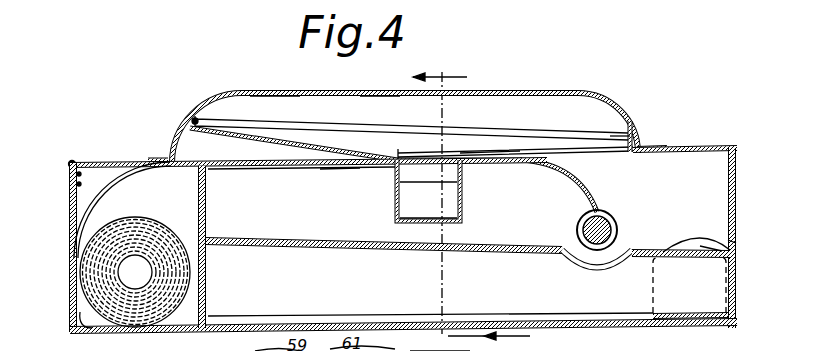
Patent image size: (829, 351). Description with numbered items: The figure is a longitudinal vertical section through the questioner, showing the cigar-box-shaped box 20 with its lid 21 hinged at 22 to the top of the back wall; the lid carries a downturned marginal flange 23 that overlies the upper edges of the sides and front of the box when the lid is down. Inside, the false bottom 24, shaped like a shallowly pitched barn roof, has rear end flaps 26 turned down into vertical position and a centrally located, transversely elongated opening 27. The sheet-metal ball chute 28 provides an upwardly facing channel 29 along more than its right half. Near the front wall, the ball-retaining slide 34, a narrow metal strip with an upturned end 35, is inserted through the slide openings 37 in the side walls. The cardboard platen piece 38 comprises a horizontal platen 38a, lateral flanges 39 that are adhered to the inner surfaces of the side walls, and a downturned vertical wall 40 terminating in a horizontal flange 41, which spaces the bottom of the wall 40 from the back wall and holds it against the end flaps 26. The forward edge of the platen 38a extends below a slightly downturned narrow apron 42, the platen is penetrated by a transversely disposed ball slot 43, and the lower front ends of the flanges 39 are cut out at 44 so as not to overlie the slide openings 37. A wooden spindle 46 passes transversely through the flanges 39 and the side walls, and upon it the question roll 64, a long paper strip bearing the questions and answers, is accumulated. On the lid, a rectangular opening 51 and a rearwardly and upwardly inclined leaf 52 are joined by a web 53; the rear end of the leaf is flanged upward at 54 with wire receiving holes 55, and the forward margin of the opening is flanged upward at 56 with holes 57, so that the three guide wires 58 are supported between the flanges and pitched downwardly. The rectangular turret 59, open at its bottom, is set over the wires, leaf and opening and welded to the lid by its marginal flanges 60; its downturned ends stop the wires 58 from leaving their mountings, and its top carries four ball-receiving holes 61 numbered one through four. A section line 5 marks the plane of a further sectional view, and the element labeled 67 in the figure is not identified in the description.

The section line 5- 5 is at (471, 202).
The box 20 is at (735, 226).
The lid 21 is at (113, 160).
The hinge 22 is at (72, 160).
The downturned marginal flange 23 is at (740, 166).
The false bottom 24 is at (660, 250).
The rear end flaps 26 is at (212, 289).
The transversely elongated opening 27 is at (583, 264).
The ball chute 28 is at (447, 204).
The upwardly facing channel 29 is at (408, 200).
The ball-retaining slide 34 is at (688, 316).
The upturned right end 35 is at (695, 247).
The slide openings 37 is at (737, 255).
The platen piece 38 is at (268, 172).
The horizontal platen 38a is at (326, 171).
The lateral flanges 39 is at (690, 165).
The downturned vertical wall 40 is at (206, 213).
The horizontal flange 41 is at (77, 322).
The narrow apron 42 is at (540, 168).
The ball slot 43 is at (458, 178).
The cutout 44 is at (735, 242).
The wooden spindle 46 is at (612, 222).
The rectangular opening 51 is at (600, 157).
The inclined rectangular leaf 52 is at (283, 143).
The web 53 is at (378, 158).
The upward flange 54 is at (232, 94).
The wire receiving holes 55 is at (208, 119).
The upward flange 56 is at (628, 124).
The wire receiving holes 57 is at (626, 135).
The guide wires 58 is at (488, 133).
The rectangular turret 59 is at (378, 93).
The marginal flanges 60 is at (658, 148).
The ball-receiving holes 61 is at (268, 93).
The question roll 64 is at (80, 268).
The plate edge 67 is at (530, 156).